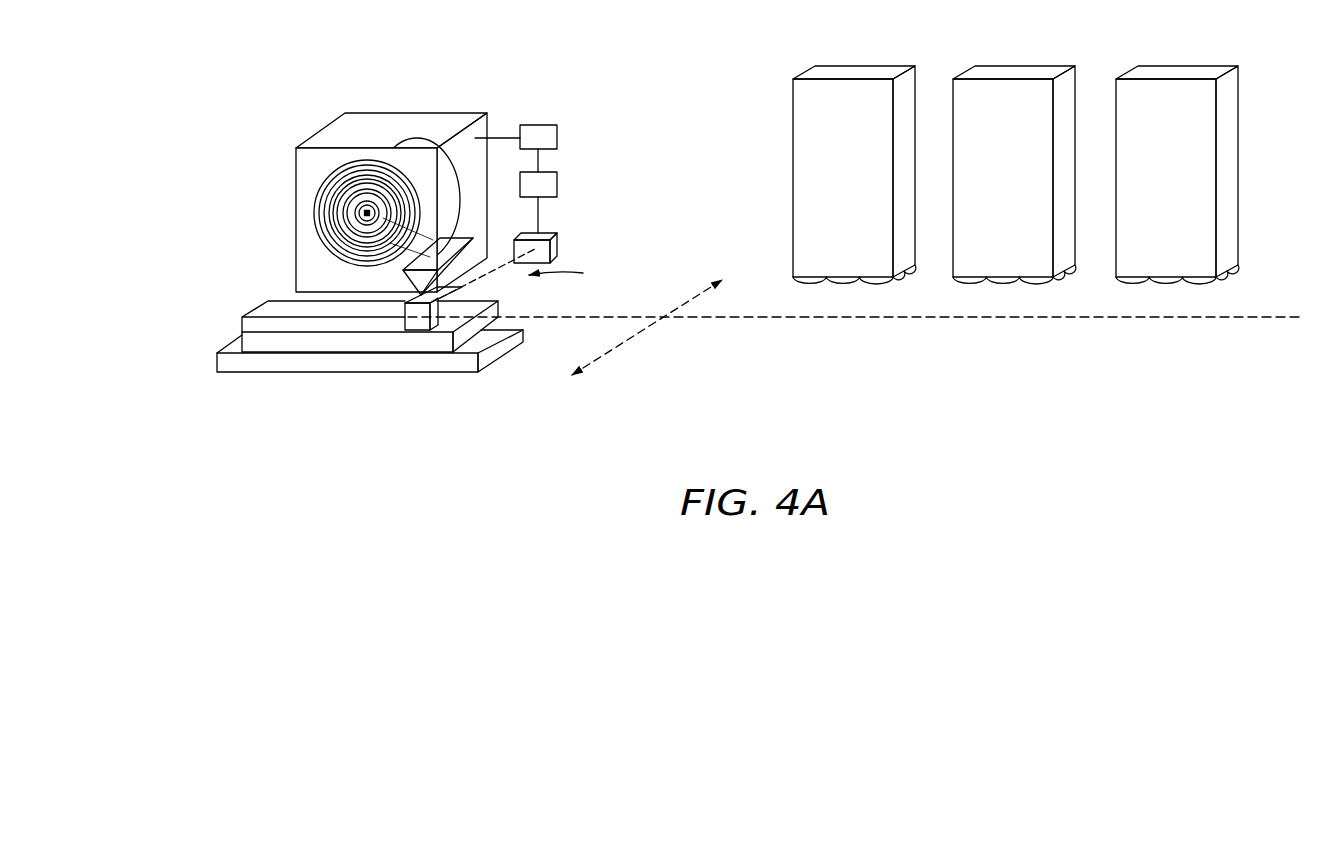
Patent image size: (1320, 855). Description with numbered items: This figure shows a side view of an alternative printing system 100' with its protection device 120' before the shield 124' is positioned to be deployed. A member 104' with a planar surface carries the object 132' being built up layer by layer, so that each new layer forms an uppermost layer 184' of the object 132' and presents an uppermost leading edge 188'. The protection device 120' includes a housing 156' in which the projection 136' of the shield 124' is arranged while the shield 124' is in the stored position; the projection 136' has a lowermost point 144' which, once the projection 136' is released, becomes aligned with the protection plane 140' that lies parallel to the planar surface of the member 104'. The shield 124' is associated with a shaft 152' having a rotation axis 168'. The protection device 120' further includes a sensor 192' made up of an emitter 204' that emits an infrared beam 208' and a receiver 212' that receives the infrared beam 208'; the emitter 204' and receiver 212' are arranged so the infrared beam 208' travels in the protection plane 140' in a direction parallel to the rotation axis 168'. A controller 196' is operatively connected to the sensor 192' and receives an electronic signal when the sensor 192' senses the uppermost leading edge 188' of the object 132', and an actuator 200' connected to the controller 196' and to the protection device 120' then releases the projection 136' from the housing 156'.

The printing system 100' is at (893, 142).
The protection device 120' is at (382, 178).
The housing 156' is at (408, 180).
The shield 124' is at (335, 209).
The shaft 152' is at (310, 200).
The rotation axis 168' is at (323, 218).
The projection 136' is at (381, 255).
The lowermost point 144' is at (413, 327).
The emitter 204' is at (433, 352).
The object 132' is at (322, 380).
The uppermost layer 184' is at (343, 316).
The uppermost leading edge 188' is at (370, 380).
The member 104' is at (370, 382).
The actuator 200' is at (560, 135).
The controller 196' is at (564, 202).
The receiver 212' is at (564, 244).
The sensor 192' is at (575, 272).
The infrared beam 208' is at (498, 278).
The protection plane 140' is at (854, 309).